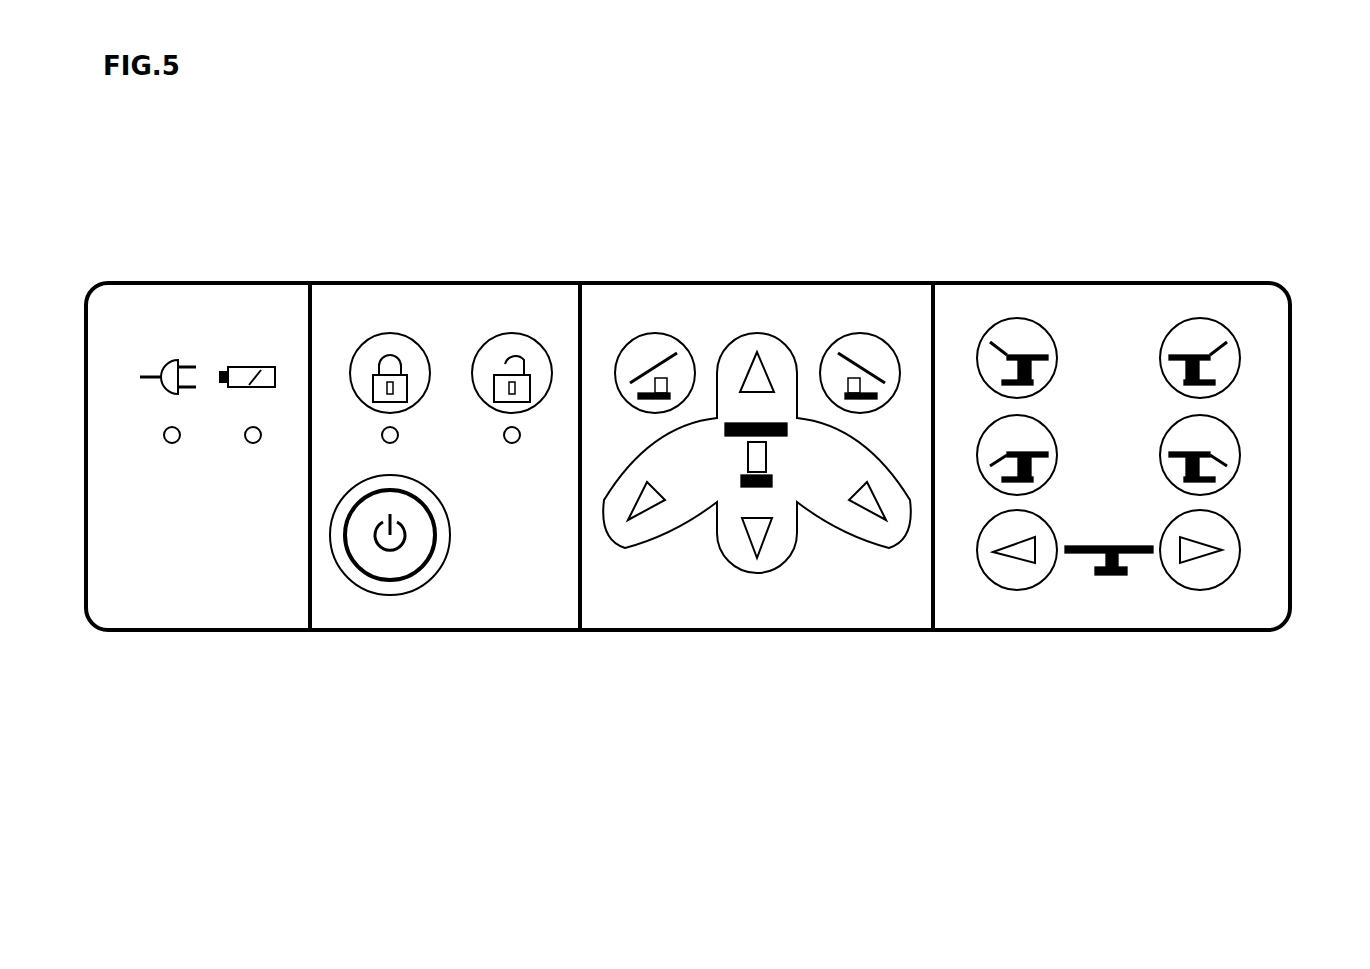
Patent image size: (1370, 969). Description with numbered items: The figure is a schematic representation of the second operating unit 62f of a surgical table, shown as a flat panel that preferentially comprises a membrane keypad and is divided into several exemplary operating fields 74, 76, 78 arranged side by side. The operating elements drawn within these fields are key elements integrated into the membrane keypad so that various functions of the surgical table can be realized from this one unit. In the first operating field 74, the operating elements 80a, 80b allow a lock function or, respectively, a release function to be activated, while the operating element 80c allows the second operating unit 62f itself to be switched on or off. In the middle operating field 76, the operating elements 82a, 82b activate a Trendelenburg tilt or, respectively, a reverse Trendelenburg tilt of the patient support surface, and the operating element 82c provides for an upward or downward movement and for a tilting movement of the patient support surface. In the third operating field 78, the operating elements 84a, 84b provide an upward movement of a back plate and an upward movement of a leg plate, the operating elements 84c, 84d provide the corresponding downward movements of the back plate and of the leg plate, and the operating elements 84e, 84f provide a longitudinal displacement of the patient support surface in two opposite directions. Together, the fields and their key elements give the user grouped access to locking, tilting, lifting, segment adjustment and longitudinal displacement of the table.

The second operating unit 62f is at (510, 172).
The operating field 74 is at (447, 295).
The operating field 76 is at (760, 290).
The operating field 78 is at (1113, 290).
The operating element 80a is at (350, 373).
The operating element 80b is at (554, 373).
The operating element 80c is at (390, 596).
The operating element 82a is at (616, 376).
The operating element 82b is at (898, 376).
The operating element 82c is at (712, 548).
The operating element 84a is at (1012, 318).
The operating element 84b is at (1197, 318).
The operating element 84c is at (977, 455).
The operating element 84d is at (1242, 454).
The operating element 84e is at (1017, 590).
The operating element 84f is at (1200, 590).